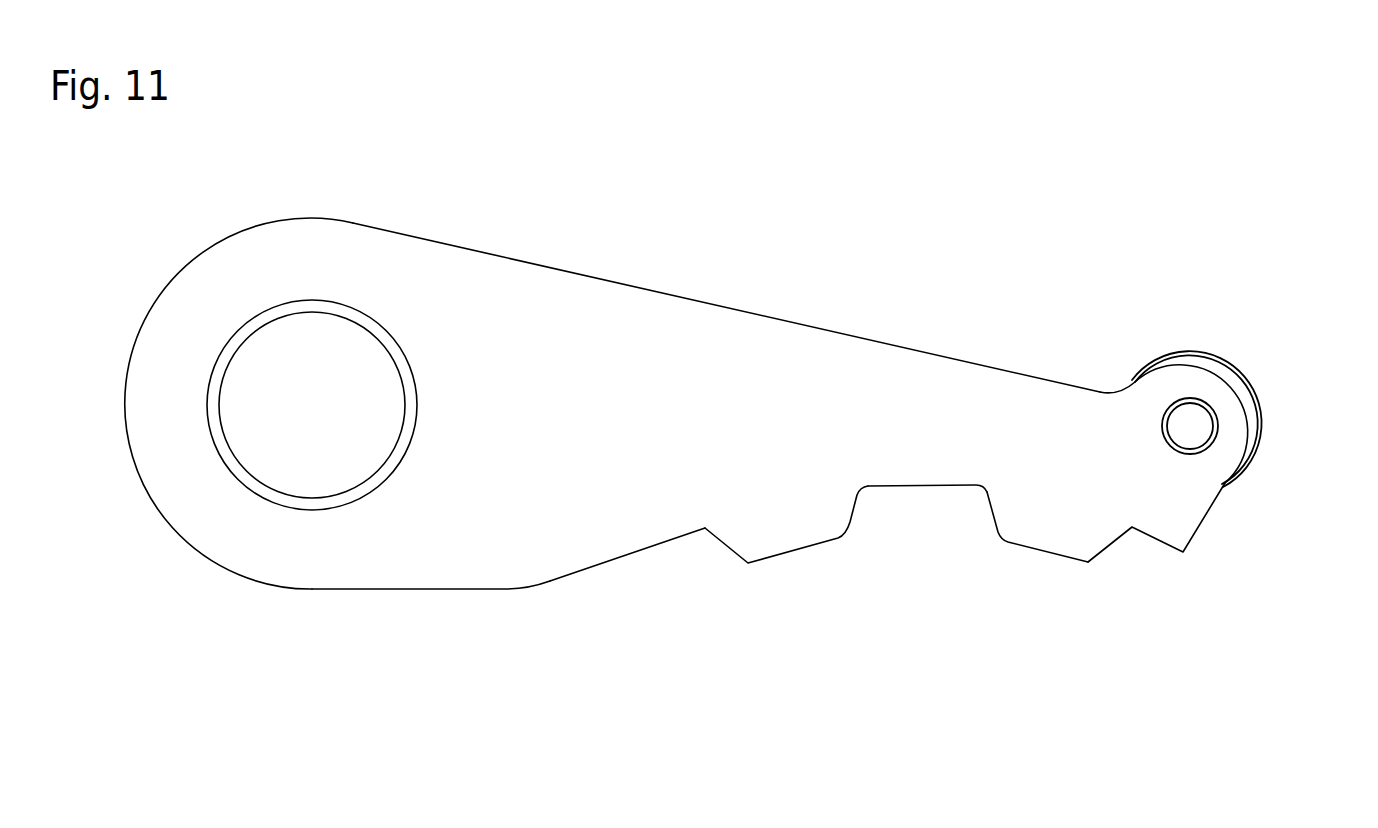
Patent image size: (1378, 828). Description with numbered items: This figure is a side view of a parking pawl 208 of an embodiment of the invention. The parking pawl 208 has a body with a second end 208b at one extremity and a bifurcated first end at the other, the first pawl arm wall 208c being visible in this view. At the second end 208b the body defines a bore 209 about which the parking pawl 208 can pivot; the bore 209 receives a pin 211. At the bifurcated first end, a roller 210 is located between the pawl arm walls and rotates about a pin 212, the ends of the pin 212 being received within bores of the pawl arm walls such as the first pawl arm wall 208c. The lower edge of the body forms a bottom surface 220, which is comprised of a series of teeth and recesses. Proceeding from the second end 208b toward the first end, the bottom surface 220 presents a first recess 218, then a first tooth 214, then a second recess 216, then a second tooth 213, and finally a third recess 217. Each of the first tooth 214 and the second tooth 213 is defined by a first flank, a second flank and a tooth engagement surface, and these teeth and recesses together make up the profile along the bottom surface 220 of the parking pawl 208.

The parking pawl 208 is at (890, 203).
The second end 208b is at (212, 252).
The first pawl arm wall 208c is at (1228, 425).
The bore 209 is at (417, 407).
The roller 210 is at (1208, 358).
The pin 211 is at (642, 343).
The pin 212 is at (1164, 426).
The second tooth 213 is at (1052, 557).
The first tooth 214 is at (783, 553).
The second recess 216 is at (913, 480).
The third recess 217 is at (1148, 535).
The first recess 218 is at (647, 542).
The bottom surface 220 is at (382, 588).